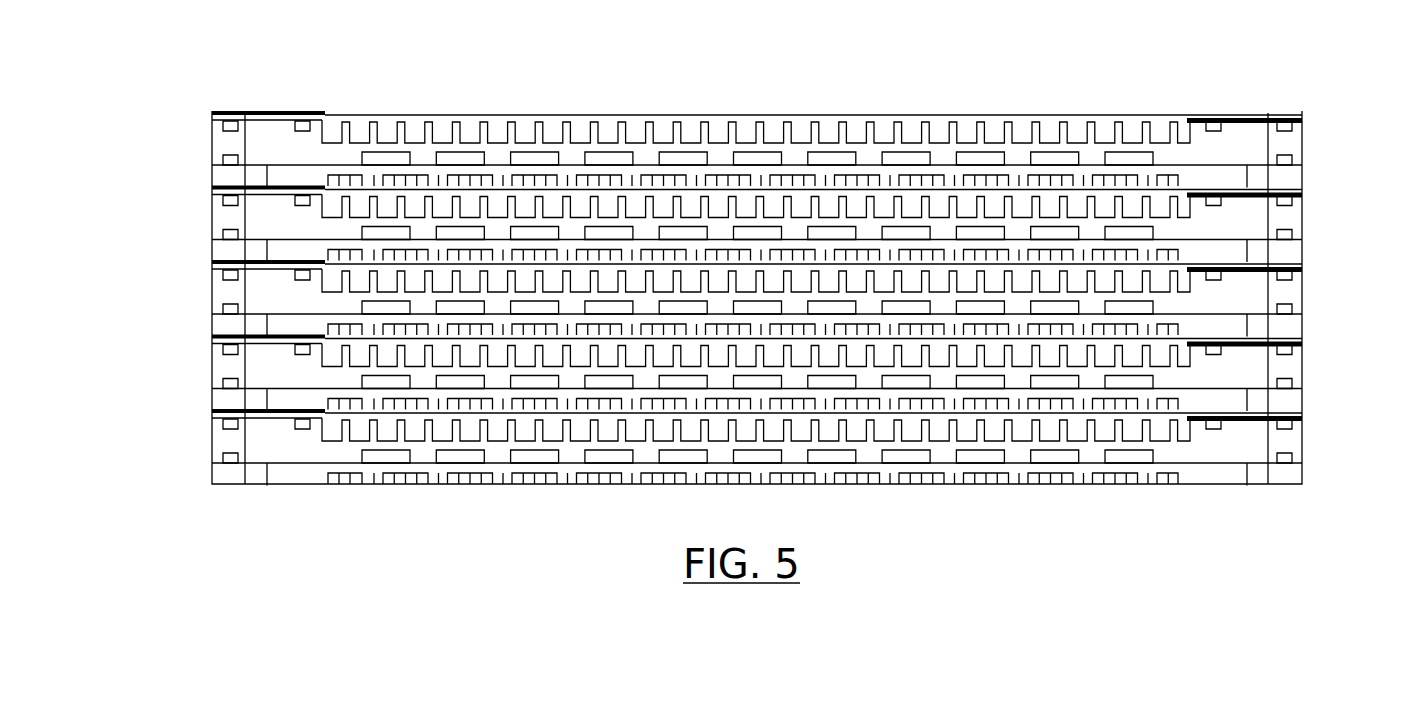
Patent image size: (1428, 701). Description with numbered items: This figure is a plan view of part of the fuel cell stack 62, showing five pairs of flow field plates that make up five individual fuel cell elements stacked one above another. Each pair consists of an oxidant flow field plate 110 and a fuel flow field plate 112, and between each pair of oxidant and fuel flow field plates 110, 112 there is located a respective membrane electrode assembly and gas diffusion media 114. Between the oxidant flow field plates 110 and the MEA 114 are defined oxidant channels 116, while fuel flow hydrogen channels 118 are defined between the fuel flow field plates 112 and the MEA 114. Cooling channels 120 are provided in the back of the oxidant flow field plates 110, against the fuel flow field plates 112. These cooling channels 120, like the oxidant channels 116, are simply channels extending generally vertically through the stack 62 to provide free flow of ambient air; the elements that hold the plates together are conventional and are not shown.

The fuel cell stack 62 is at (827, 98).
The oxidant flow field plate 110 is at (307, 377).
The fuel flow field plate 112 is at (1213, 402).
The membrane electrode assembly and gas diffusion media 114 is at (303, 262).
The oxidant channels 116 is at (1190, 290).
The fuel flow hydrogen channels 118 is at (1175, 186).
The cooling channels 120 is at (372, 378).